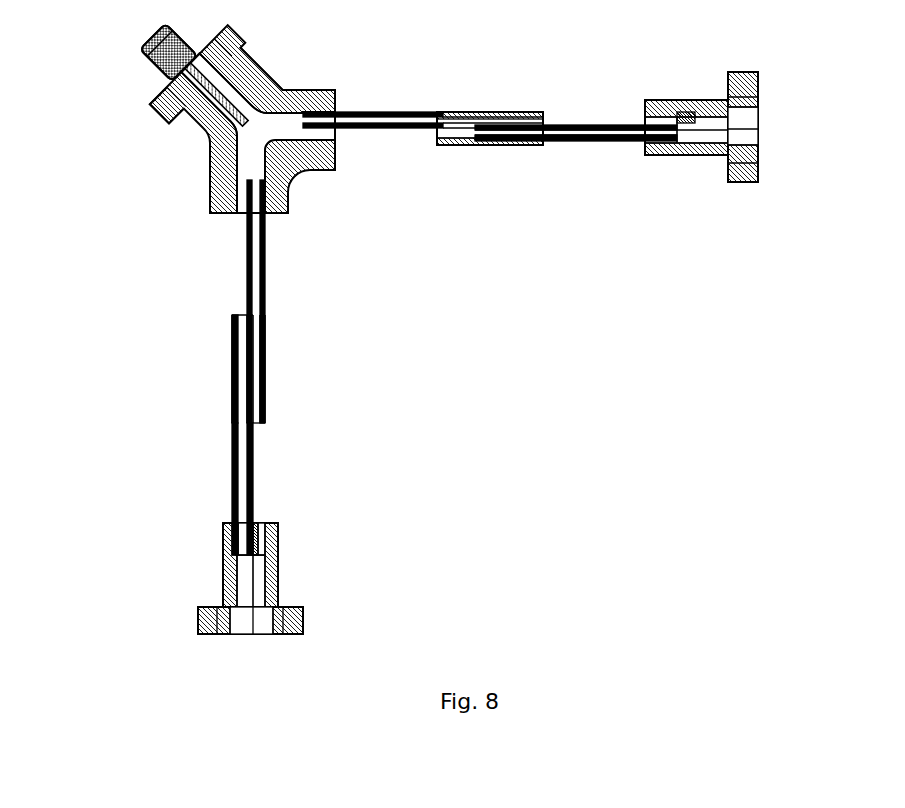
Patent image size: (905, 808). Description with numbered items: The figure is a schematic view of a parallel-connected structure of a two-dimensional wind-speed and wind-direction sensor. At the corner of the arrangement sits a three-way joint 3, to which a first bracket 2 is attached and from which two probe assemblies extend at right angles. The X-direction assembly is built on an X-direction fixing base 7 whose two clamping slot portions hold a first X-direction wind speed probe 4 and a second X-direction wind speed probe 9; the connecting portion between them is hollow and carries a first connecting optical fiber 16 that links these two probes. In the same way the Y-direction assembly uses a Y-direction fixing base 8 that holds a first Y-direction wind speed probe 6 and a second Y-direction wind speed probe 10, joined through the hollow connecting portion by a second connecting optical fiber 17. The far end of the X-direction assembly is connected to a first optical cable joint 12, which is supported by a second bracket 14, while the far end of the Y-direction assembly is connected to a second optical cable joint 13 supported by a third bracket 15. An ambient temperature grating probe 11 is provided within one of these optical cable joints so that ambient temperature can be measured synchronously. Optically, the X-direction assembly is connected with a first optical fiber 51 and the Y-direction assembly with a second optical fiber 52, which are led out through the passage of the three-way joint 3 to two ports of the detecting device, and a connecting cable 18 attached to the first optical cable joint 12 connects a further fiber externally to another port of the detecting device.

The first bracket 2 is at (162, 111).
The three-way joint 3 is at (197, 138).
The first X-direction wind speed probe 4 is at (245, 233).
The first Y-direction wind speed probe 6 is at (402, 113).
The X-direction fixing base 7 is at (233, 360).
The Y-direction fixing base 8 is at (493, 115).
The second X-direction wind speed probe 9 is at (232, 453).
The second Y-direction wind speed probe 10 is at (596, 124).
The ambient temperature grating probe 11 is at (670, 97).
The first optical cable joint 12 is at (223, 567).
The second optical cable joint 13 is at (696, 97).
The second bracket 14 is at (198, 620).
The third bracket 15 is at (746, 72).
The first connecting optical fiber 16 is at (267, 363).
The second connecting optical fiber 17 is at (470, 135).
The connecting cable 18 is at (150, 44).
The first optical fiber 51 is at (303, 82).
The second optical fiber 52 is at (245, 112).